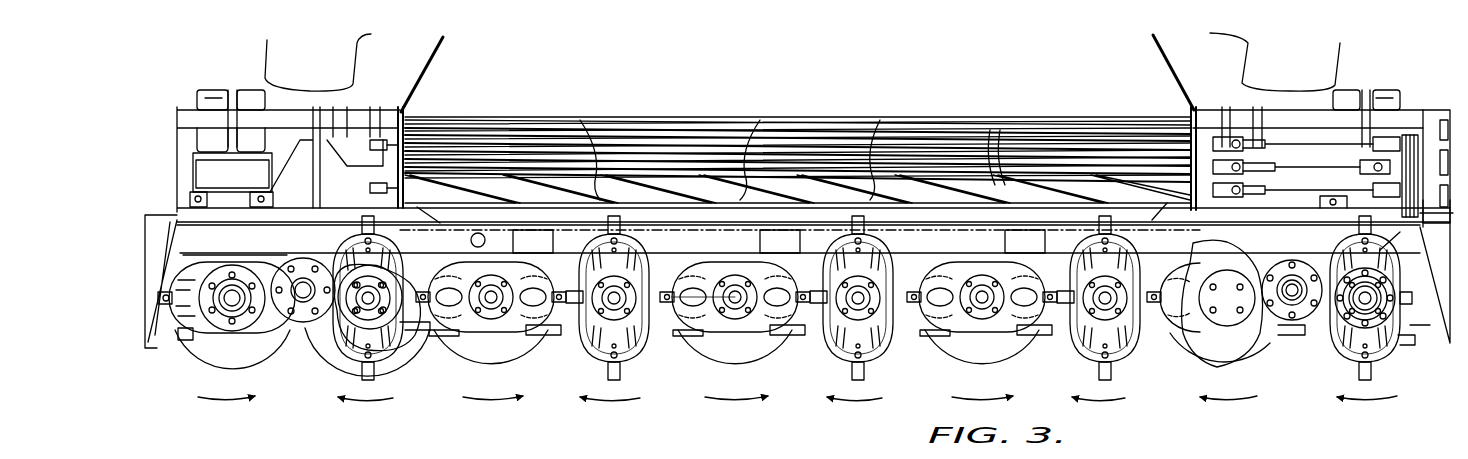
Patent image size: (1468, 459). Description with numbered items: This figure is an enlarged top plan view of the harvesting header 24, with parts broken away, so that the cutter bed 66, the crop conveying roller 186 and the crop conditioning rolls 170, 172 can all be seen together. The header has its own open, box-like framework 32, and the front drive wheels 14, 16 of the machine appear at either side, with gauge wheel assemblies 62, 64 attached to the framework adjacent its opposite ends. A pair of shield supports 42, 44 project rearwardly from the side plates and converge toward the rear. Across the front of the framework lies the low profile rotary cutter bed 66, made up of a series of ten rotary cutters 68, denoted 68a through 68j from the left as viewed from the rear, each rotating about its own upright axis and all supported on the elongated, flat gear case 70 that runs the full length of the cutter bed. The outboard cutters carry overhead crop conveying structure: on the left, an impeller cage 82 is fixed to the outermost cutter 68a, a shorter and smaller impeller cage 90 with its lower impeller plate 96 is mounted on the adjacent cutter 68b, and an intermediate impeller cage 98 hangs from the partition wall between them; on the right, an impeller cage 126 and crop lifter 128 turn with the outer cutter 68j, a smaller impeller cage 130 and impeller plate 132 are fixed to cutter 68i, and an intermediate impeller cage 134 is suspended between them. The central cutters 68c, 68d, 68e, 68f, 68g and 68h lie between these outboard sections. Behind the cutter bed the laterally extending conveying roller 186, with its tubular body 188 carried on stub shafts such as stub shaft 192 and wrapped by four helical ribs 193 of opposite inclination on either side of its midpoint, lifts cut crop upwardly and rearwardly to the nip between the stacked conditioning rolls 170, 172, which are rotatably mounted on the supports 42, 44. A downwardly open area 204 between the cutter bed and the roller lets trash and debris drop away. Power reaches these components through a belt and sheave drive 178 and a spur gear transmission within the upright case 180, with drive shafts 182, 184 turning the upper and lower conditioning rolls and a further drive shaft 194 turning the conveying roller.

The front drive wheel 14 is at (1263, 57).
The front drive wheel 16 is at (329, 57).
The header 24 is at (363, 98).
The framework 32 is at (170, 199).
The shield support 42 is at (1160, 53).
The shield support 44 is at (445, 40).
The gauge wheel assembly 62 is at (1343, 92).
The gauge wheel assembly 64 is at (250, 92).
The cutter bed 66 is at (1409, 357).
The rotary cutters 68 is at (186, 366).
The rotary cutter 68a is at (1340, 350).
The rotary cutter 68b is at (1187, 350).
The rotary cutter 68c is at (1128, 357).
The rotary cutter 68d is at (987, 328).
The rotary cutter 68e is at (890, 347).
The rotary cutter 68f is at (743, 327).
The rotary cutter 68g is at (635, 363).
The rotary cutter 68h is at (517, 330).
The rotary cutter 68i is at (340, 360).
The rotary cutter 68j is at (253, 340).
The gear case 70 is at (664, 314).
The impeller cage 82 is at (1388, 308).
The impeller cage 90 is at (1215, 272).
The lower impeller plate 96 is at (1250, 350).
The intermediate impeller cage 98 is at (1303, 318).
The impeller cage 126 is at (220, 272).
The crop lifter 128 is at (263, 280).
The impeller cage 130 is at (382, 320).
The impeller plate 132 is at (413, 325).
The intermediate impeller cage 134 is at (305, 263).
The upper crop conditioning roll 170 is at (1025, 163).
The lower crop conditioning roll 172 is at (663, 140).
The belt and sheave drive 178 is at (1405, 135).
The upright case 180 is at (1443, 120).
The drive shaft 182 is at (1267, 143).
The drive shaft 184 is at (1300, 195).
The conveying roller 186 is at (870, 183).
The body 188 is at (733, 187).
The stub shaft 192 is at (370, 187).
The helical ribs 193 is at (600, 187).
The drive shaft 194 is at (1315, 190).
The downwardly open area 204 is at (922, 221).